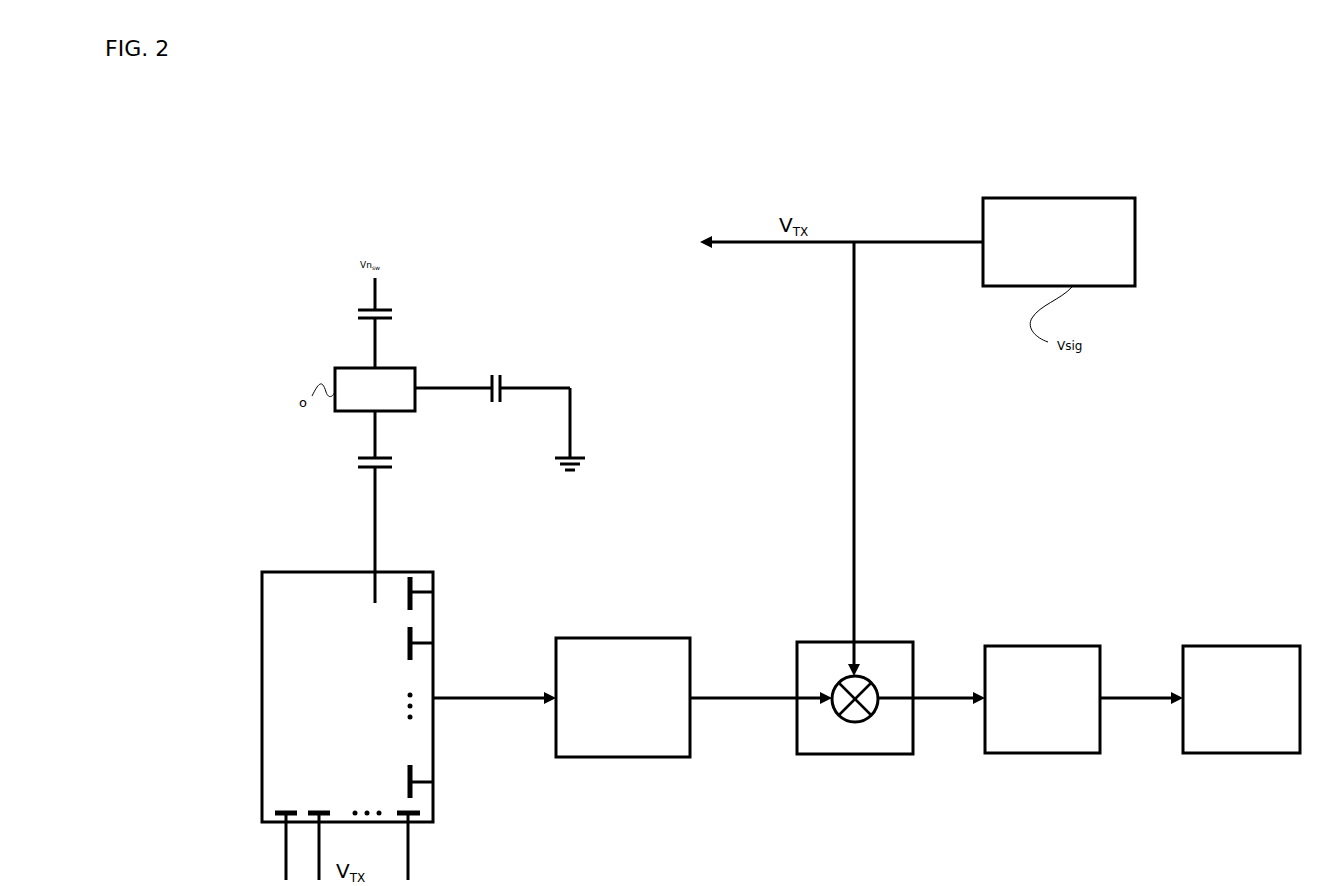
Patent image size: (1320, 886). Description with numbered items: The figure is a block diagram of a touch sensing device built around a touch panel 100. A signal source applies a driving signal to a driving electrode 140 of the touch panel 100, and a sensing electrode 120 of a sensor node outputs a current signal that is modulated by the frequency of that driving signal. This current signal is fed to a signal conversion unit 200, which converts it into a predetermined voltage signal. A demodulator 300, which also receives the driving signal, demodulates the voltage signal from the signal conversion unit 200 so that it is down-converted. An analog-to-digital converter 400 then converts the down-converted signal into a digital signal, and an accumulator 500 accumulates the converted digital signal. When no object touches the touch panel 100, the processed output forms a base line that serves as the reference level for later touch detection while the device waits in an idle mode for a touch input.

The touch panel 100 is at (278, 572).
The sensing electrode 120 is at (418, 577).
The driving electrode 140 is at (284, 832).
The signal conversion unit 200 is at (623, 757).
The demodulator 300 is at (855, 754).
The analog-to-digital converter 400 is at (1048, 753).
The accumulator 500 is at (1243, 753).